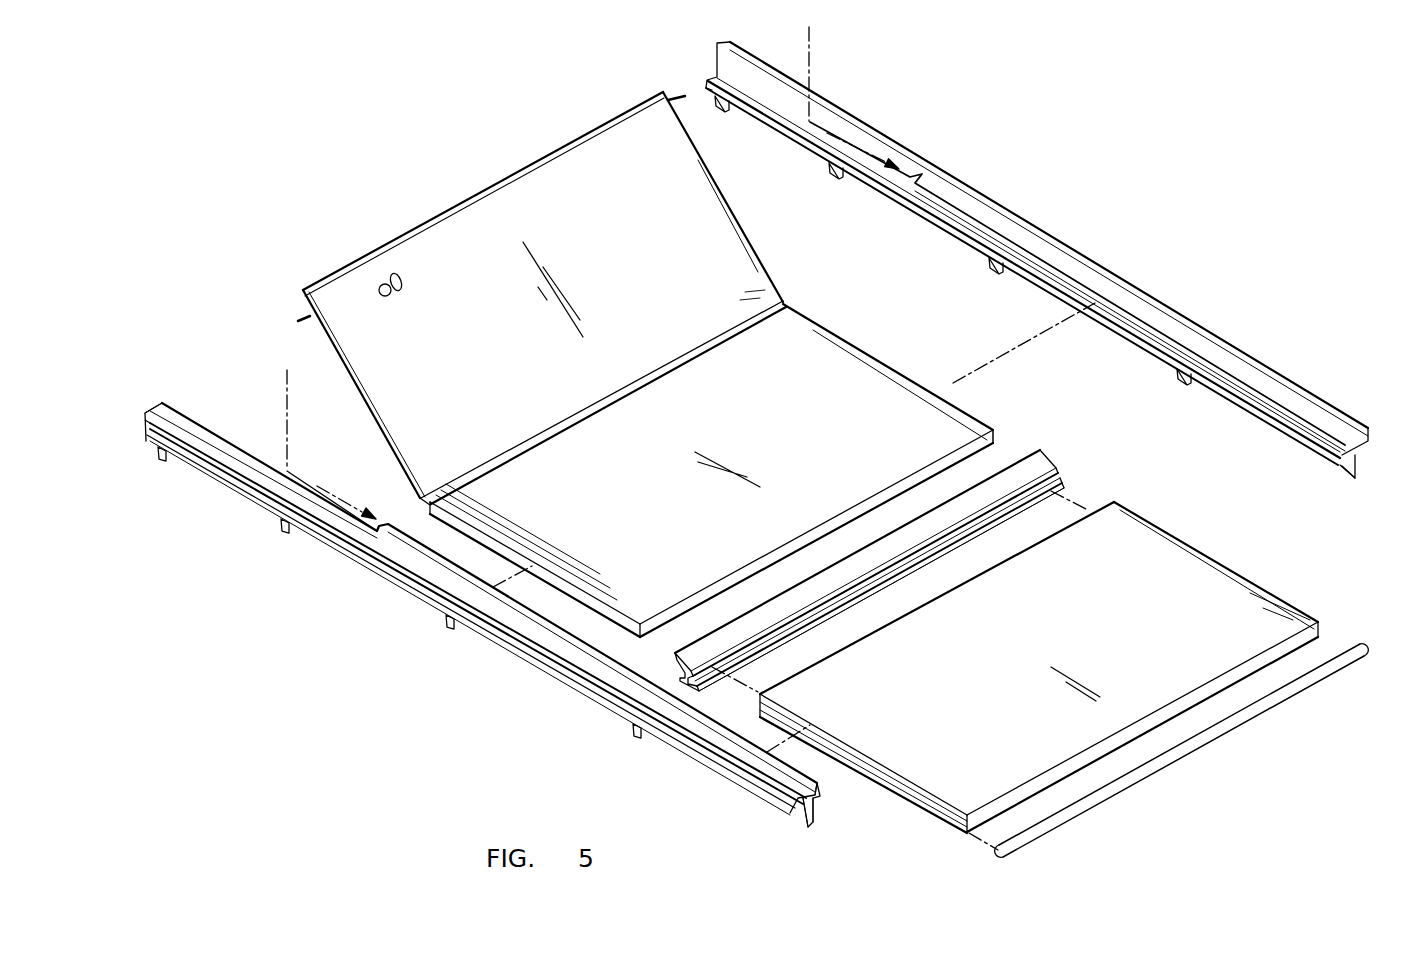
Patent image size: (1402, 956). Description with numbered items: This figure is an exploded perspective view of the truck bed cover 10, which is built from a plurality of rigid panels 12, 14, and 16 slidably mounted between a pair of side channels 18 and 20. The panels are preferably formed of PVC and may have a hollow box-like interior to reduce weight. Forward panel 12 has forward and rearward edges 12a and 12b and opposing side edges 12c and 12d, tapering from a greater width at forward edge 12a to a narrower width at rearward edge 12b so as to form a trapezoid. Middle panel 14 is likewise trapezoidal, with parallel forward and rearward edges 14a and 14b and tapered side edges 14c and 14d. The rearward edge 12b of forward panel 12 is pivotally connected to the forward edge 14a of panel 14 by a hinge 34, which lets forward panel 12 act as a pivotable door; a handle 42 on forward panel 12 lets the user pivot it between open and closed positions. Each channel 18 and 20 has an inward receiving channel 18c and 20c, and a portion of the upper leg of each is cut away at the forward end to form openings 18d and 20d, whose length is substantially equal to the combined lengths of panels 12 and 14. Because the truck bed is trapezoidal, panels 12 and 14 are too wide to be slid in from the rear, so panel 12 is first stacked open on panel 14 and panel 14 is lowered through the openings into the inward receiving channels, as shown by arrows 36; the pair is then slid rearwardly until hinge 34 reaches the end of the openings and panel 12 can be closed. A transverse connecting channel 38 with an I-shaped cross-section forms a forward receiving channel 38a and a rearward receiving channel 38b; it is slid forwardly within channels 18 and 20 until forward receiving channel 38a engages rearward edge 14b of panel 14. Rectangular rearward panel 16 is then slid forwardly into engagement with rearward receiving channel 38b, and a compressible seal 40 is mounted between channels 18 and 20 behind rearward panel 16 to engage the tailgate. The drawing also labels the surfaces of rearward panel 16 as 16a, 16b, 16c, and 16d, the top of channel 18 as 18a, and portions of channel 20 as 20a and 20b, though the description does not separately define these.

The truck bed cover 10 is at (1070, 150).
The forward panel 12 is at (559, 298).
The forward edge 12a is at (475, 196).
The rearward edge 12b is at (672, 363).
The side edge 12c is at (721, 177).
The side edge 12d is at (378, 417).
The middle panel 14 is at (711, 470).
The forward edge 14a is at (582, 423).
The rearward edge 14b is at (863, 510).
The side edge 14c is at (857, 342).
The side edge 14d is at (508, 556).
The rearward panel 16 is at (1039, 667).
The third panel rear edge 16a is at (937, 598).
The third panel front edge 16b is at (1234, 678).
The third panel right edge 16c is at (1201, 546).
The third panel left edge 16d is at (841, 750).
The channel 18 is at (982, 259).
The right rail top surface 18a is at (714, 68).
The inward receiving channel 18c is at (1256, 425).
The opening 18d is at (783, 92).
The channel 20 is at (536, 598).
The left rail end portion 20a is at (777, 800).
The left rail web 20b is at (738, 790).
The inward receiving channel 20c is at (838, 790).
The opening 20d is at (219, 422).
The hinge 34 is at (747, 293).
The arrows 36 is at (812, 76).
The transverse connecting channel 38 is at (918, 543).
The forward receiving channel 38a is at (940, 502).
The rearward receiving channel 38b is at (974, 531).
The compressible seal 40 is at (1212, 735).
The handle 42 is at (393, 270).